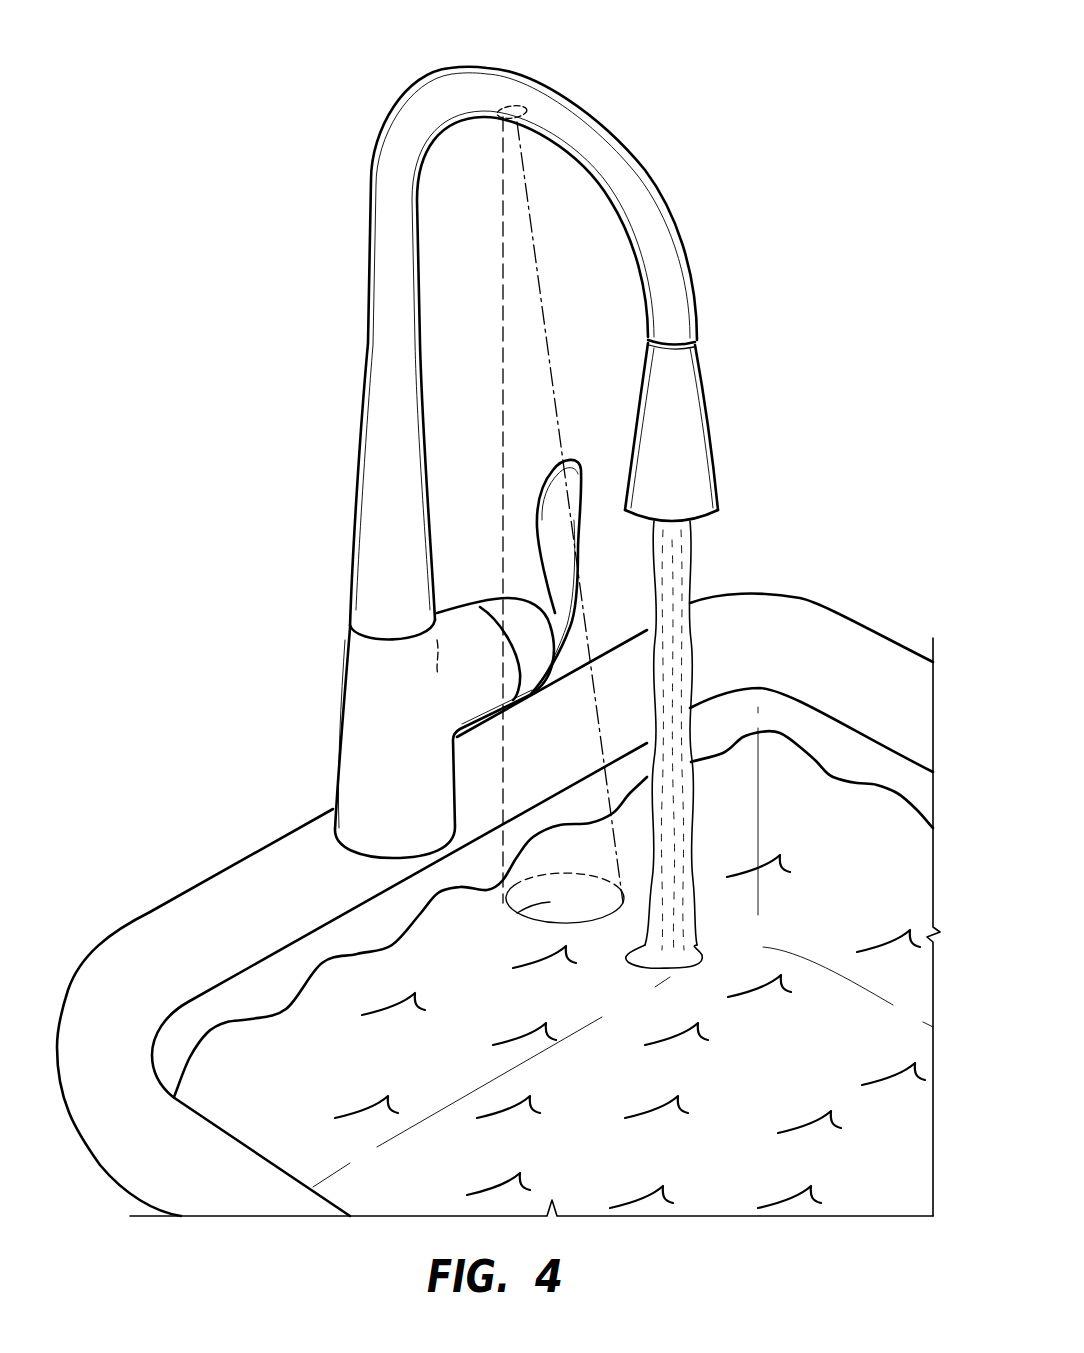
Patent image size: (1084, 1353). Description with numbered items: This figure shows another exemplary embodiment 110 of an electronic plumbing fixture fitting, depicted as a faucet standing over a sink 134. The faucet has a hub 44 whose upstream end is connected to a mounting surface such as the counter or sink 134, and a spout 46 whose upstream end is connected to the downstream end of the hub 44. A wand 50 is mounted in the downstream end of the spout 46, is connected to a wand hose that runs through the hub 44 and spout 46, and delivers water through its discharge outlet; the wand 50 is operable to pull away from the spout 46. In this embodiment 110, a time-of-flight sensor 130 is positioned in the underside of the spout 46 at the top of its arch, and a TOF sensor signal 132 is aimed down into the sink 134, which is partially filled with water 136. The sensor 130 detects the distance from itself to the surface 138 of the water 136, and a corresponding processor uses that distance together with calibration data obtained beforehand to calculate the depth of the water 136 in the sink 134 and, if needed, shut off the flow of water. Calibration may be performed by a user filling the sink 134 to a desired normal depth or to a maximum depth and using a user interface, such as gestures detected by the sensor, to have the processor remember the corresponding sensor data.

The exemplary embodiment 110 is at (452, 489).
The spout 46 is at (577, 123).
The hub 44 is at (347, 787).
The wand 50 is at (688, 384).
The TOF sensor 130 is at (503, 104).
The TOF sensor signal 132 is at (542, 268).
The sink 134 is at (205, 910).
The water 136 is at (336, 983).
The surface of the water 138 is at (507, 908).